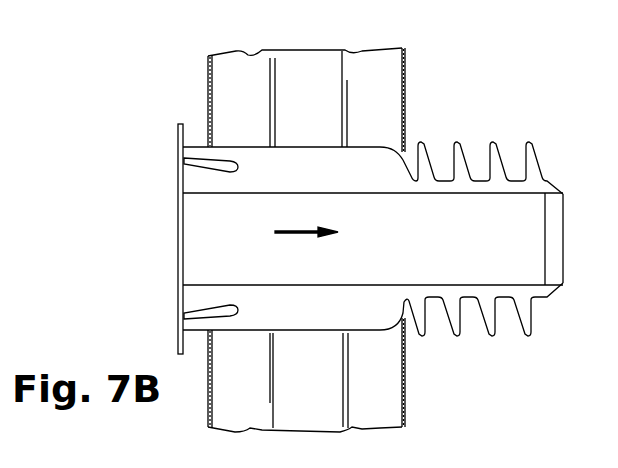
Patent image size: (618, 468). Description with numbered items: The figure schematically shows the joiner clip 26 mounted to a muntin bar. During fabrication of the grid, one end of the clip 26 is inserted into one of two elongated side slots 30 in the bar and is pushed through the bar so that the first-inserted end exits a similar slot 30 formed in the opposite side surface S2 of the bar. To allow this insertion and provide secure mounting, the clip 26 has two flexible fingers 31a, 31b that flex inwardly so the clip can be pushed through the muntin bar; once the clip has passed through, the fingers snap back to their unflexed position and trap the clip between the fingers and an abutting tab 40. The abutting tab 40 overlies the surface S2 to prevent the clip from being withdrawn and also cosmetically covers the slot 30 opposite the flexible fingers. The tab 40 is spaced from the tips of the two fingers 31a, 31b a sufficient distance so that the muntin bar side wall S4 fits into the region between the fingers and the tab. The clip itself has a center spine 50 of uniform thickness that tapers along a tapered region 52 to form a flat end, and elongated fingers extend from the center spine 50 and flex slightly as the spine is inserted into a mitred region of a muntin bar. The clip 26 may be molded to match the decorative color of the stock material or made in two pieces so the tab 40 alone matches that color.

The center spine 50 is at (338, 260).
The elongated side slot 30 is at (403, 155).
The joiner clip 26 is at (438, 347).
The tapered region 52 is at (553, 214).
The abutting tab 40 is at (177, 213).
The flexible finger 31a is at (218, 147).
The flexible finger 31b is at (218, 325).
The opposite side surface S2 is at (405, 88).
The muntin bar side wall S4 is at (208, 385).